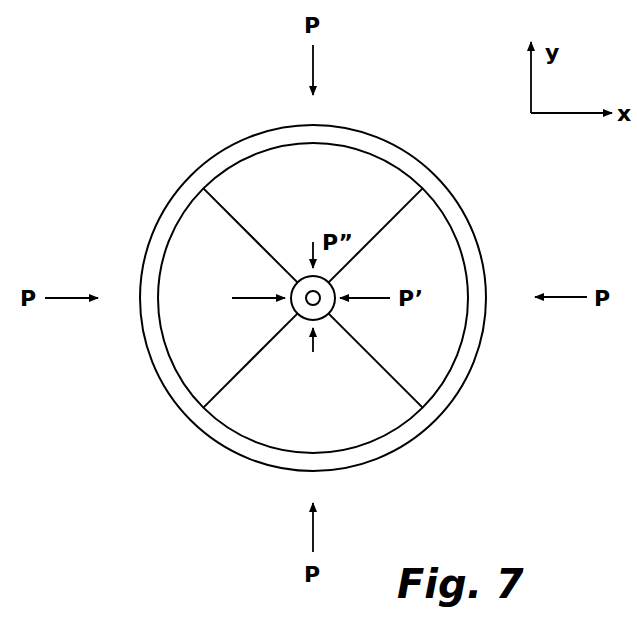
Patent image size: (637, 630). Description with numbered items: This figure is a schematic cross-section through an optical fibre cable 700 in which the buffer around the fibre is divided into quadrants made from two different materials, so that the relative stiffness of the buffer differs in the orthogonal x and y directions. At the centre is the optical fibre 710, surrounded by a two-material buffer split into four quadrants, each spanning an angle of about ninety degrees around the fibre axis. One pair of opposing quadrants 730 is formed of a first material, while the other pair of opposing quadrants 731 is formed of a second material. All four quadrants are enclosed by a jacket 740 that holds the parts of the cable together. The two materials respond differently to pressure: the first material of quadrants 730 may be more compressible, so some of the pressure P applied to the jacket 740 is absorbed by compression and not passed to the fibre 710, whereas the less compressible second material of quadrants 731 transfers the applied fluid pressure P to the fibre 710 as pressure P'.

The optical fibre cable 700 is at (167, 155).
The jacket 740 is at (450, 207).
The optical fibre 710 is at (305, 310).
The other opposing quadrants 731 is at (423, 375).
The opposing quadrants 730 is at (392, 403).